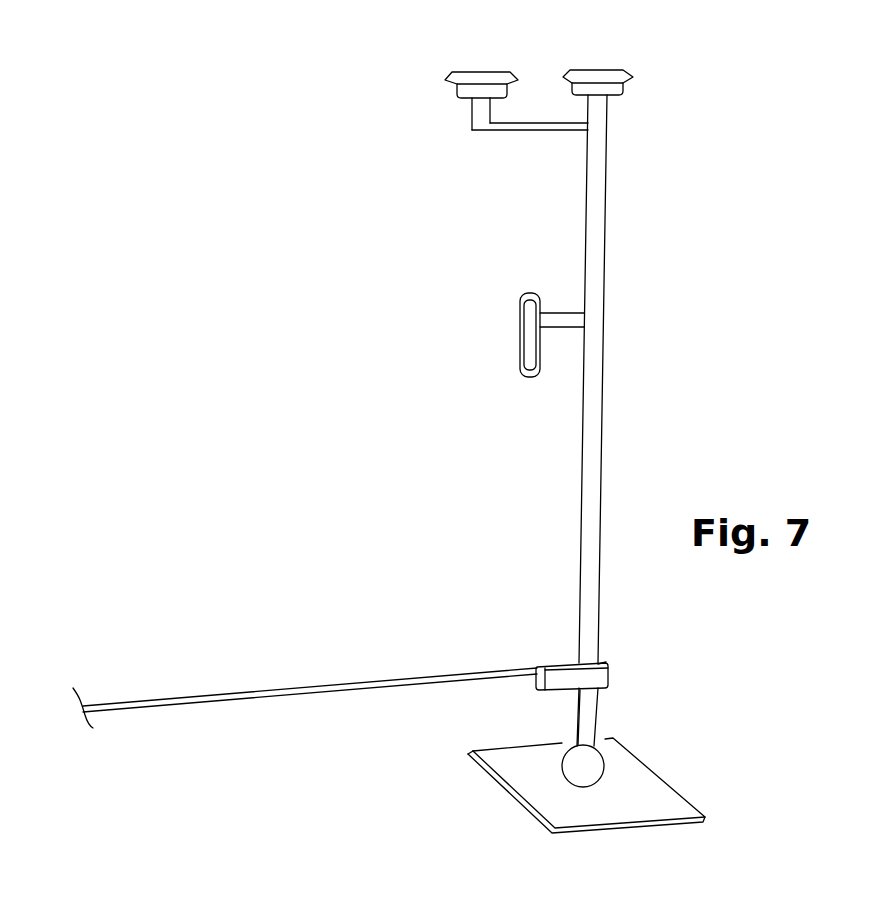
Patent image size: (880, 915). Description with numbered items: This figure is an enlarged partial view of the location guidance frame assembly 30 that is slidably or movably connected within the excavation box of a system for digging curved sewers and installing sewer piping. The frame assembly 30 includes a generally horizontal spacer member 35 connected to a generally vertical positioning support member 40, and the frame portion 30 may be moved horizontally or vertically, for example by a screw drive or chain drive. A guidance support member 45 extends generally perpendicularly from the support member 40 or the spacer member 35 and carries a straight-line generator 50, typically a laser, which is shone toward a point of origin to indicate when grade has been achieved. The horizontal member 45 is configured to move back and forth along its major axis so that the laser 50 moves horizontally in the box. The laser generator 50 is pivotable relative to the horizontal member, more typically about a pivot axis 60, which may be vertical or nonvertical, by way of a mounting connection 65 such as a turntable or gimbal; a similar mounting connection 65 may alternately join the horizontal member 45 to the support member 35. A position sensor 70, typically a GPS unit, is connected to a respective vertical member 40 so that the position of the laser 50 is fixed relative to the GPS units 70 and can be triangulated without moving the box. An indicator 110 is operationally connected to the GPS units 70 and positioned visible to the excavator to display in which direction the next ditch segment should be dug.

The location guidance frame assembly 30 is at (716, 308).
The horizontal spacer member 35 is at (548, 130).
The vertical positioning support member 40 is at (588, 253).
The guidance support member 45 is at (555, 690).
The straight-line generator 50 is at (545, 663).
The pivot axis 60 is at (225, 695).
The mounting connection 65 is at (600, 668).
The position sensor 70 is at (466, 82).
The indicator 110 is at (520, 330).